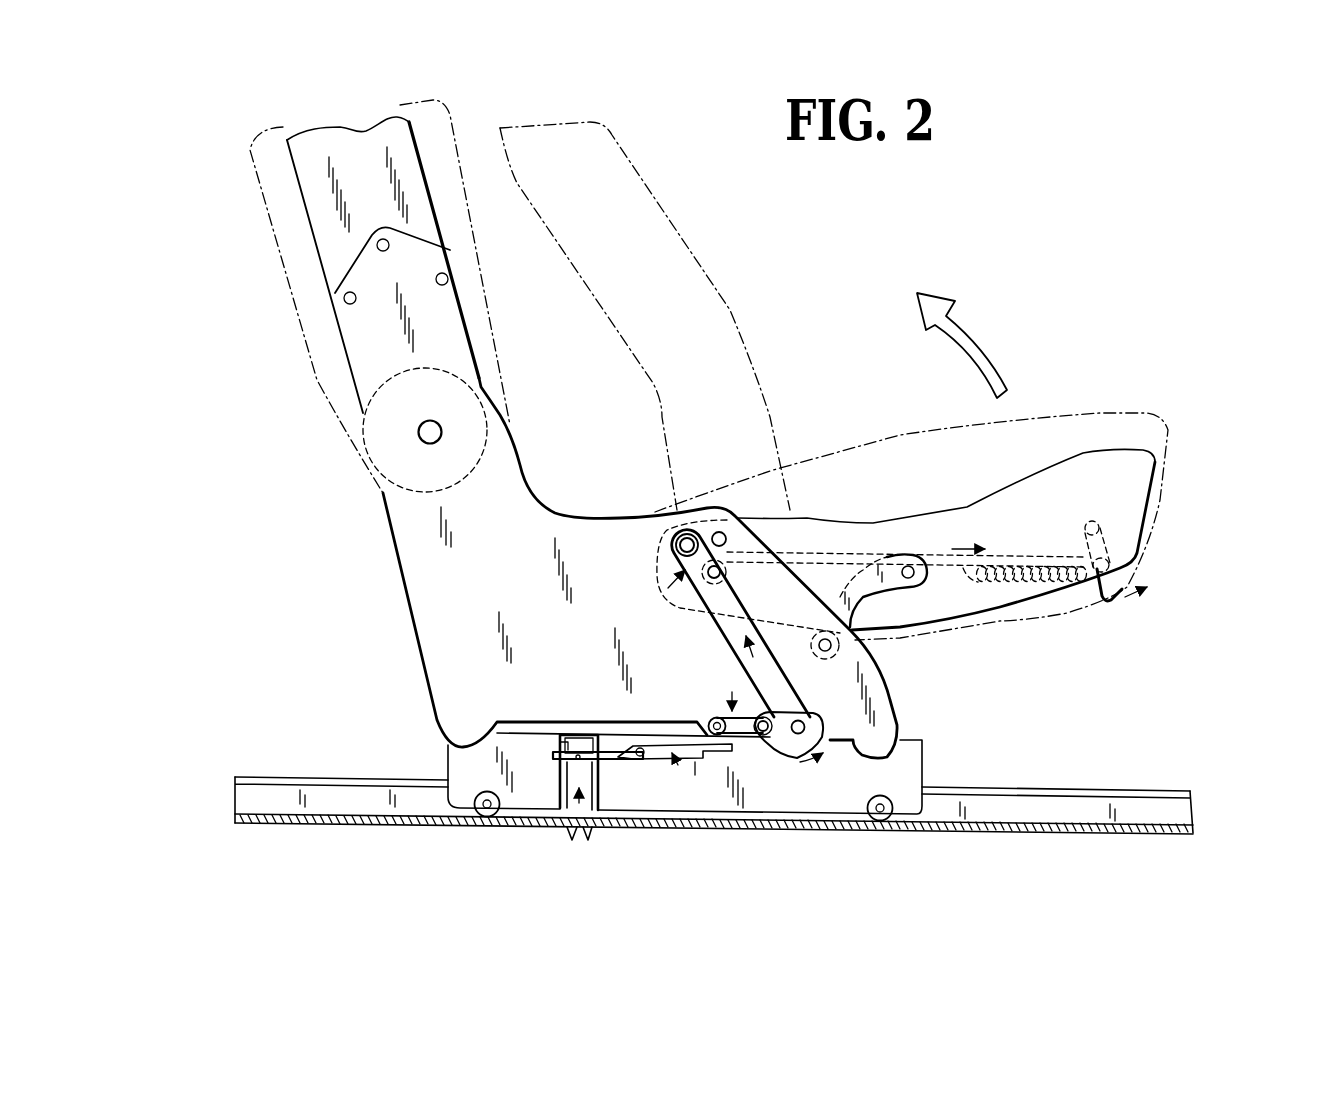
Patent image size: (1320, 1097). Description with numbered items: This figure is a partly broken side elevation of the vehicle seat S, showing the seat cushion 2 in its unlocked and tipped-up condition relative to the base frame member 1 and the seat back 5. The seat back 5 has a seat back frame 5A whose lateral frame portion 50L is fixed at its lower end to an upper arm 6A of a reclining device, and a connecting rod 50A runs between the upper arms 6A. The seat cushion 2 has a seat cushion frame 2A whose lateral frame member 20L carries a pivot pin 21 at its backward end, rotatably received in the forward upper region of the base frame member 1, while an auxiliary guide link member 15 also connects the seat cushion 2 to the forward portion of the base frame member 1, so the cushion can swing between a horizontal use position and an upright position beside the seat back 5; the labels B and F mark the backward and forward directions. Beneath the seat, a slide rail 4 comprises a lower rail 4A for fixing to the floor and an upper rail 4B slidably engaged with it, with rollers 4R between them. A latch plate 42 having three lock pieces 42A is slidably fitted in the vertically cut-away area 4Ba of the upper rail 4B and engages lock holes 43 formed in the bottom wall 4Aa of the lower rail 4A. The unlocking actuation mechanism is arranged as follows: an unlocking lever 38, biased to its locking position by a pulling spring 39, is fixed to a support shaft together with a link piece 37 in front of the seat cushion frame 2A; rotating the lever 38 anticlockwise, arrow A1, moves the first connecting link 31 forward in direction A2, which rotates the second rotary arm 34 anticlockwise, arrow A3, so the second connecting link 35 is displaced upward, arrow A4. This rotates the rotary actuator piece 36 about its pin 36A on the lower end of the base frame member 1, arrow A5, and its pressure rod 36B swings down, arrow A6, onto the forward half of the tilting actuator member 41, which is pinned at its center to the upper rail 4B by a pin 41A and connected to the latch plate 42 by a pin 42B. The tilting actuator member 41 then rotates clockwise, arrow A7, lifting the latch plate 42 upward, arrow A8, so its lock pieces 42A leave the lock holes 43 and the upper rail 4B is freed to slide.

The base frame member 1 is at (440, 647).
The seat cushion 2 is at (1168, 420).
The seat cushion frame 2A is at (698, 243).
The slide rail 4 is at (1077, 778).
The lower rail 4A is at (318, 790).
The bottom wall 4Aa is at (367, 834).
The upper rail 4B is at (457, 760).
The vertically cut-away area 4Ba is at (563, 740).
The roller 4R is at (476, 814).
The seat back 5 is at (280, 271).
The seat back frame 5A is at (296, 214).
The upper arm 6A is at (353, 328).
The auxiliary guide link member 15 is at (863, 593).
The lateral frame member 20L is at (960, 598).
The pivot pin 21 is at (720, 530).
The first connecting link 31 is at (1062, 557).
The second rotary arm 34 is at (674, 545).
The second connecting link 35 is at (735, 628).
The rotary actuator piece 36 is at (792, 758).
The pin 36A is at (760, 757).
The pressure rod 36B is at (722, 717).
The link piece 37 is at (1110, 539).
The unlocking lever 38 is at (1113, 597).
The pulling spring 39 is at (1042, 598).
The tilting actuator member 41 is at (682, 770).
The pin 41A is at (646, 765).
The latch plate 42 is at (558, 798).
The lock piece 42A is at (587, 840).
The pin 42B is at (580, 755).
The lock hole 43 is at (313, 825).
The connecting rod 50A is at (424, 439).
The lateral frame portion 50L is at (410, 158).
The vehicle seat S is at (948, 213).
The backward direction B is at (180, 414).
The forward direction F is at (1305, 415).
The arrow A1 is at (1150, 583).
The forward direction A2 is at (983, 549).
The arrow A3 is at (697, 582).
The arrow A4 is at (762, 656).
The arrow A5 is at (825, 752).
The arrow A6 is at (730, 689).
The arrow A7 is at (689, 773).
The movement direction A8 is at (580, 784).